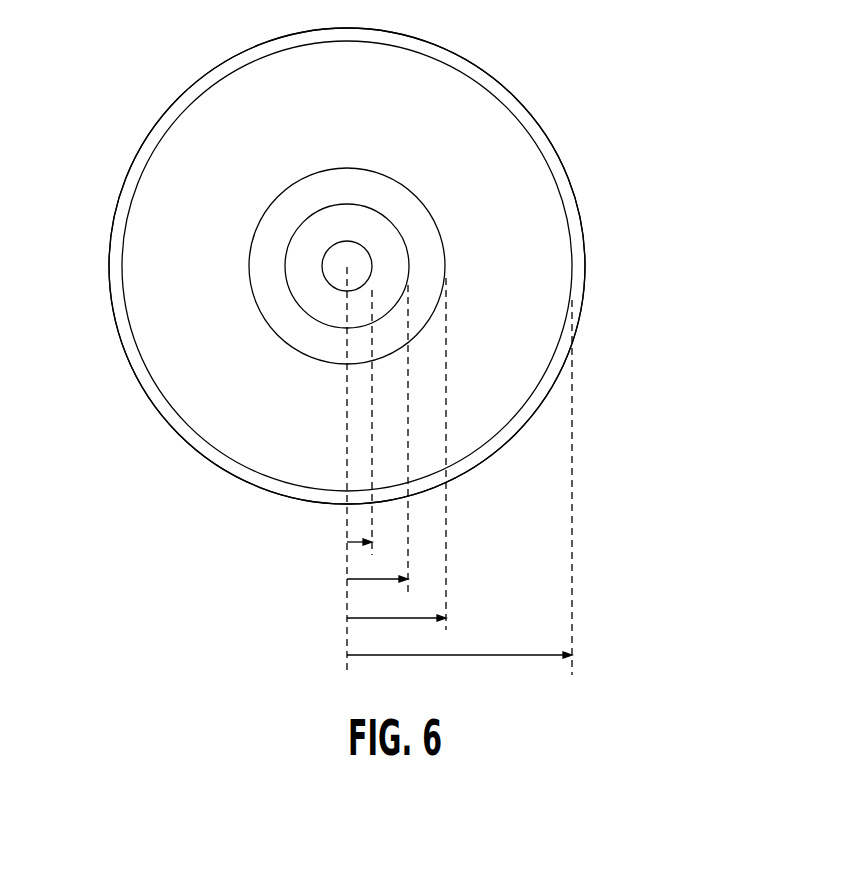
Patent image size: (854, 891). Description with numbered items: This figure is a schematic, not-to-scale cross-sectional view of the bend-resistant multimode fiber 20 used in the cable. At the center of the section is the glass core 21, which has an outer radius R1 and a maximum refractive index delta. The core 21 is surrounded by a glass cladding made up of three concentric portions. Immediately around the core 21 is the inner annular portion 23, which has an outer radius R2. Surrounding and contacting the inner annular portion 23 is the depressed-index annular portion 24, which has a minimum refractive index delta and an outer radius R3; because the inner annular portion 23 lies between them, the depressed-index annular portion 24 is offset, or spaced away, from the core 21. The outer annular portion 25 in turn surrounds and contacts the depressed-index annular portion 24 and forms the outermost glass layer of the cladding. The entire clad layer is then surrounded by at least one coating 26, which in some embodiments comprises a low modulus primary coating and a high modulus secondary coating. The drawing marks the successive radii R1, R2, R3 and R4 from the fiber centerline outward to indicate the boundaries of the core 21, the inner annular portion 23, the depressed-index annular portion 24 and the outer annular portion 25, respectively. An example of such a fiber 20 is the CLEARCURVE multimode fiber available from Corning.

The BR-MM fiber 20 is at (157, 70).
The glass core 21 is at (358, 266).
The inner annular portion 23 is at (366, 229).
The depressed-index annular portion 24 is at (388, 186).
The outer annular portion 25 is at (490, 133).
The coating 26 is at (110, 236).
The outer radius of core R1 is at (347, 541).
The outer radius of inner annular portion R2 is at (367, 580).
The outer radius of depressed-index annular portion R3 is at (372, 619).
The radius R4 is at (370, 656).